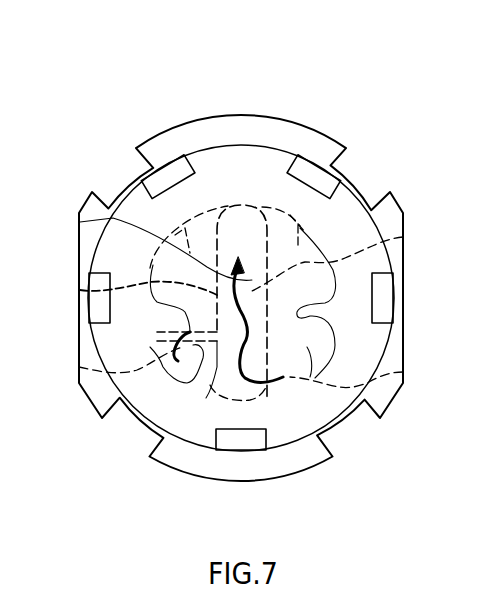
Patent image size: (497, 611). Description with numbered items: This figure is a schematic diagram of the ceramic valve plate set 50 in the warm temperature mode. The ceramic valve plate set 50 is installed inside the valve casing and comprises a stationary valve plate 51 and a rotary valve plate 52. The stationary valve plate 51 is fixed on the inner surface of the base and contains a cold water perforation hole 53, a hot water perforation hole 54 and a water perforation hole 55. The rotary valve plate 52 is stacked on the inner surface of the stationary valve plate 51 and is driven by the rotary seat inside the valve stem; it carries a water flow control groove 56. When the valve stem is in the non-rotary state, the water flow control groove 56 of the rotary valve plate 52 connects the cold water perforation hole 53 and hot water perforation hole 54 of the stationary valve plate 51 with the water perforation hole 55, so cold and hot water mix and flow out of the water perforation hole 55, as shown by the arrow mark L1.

The ceramic valve plate set 50 is at (330, 58).
The stationary valve plate 51 is at (307, 127).
The rotary valve plate 52 is at (242, 167).
The cold water perforation hole 53 is at (403, 372).
The hot water perforation hole 54 is at (79, 367).
The water perforation hole 55 is at (403, 237).
The water flow control groove 56 is at (80, 290).
The arrow mark L1 is at (80, 222).